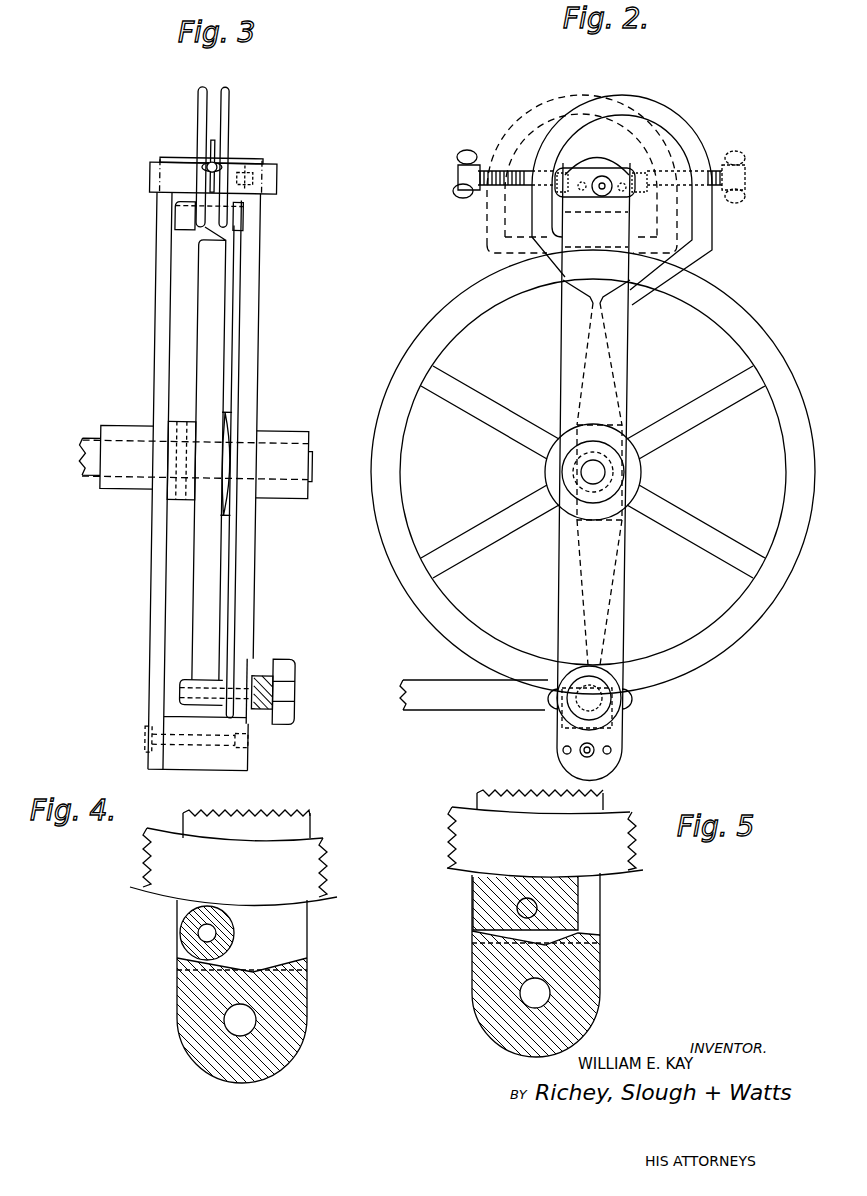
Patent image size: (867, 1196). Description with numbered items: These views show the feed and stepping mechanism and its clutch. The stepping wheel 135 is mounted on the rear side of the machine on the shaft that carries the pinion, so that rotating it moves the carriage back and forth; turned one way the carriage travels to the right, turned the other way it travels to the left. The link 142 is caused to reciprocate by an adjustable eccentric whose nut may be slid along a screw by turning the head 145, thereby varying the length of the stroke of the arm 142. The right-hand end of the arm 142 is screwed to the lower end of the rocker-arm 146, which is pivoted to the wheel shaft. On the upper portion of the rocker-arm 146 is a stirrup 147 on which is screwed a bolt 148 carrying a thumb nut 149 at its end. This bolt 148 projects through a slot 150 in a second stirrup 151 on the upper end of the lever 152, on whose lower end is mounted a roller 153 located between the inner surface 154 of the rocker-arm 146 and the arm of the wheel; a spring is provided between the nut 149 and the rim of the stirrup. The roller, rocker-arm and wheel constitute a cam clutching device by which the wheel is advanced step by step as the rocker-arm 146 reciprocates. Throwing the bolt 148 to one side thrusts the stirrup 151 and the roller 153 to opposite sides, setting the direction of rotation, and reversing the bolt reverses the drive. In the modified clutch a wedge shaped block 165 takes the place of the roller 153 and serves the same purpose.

In FIG. 3, the stepping wheel 135 is at (196, 262).
In FIG. 2, the stepping wheel 135 is at (776, 288).
In FIG. 4, the stepping wheel 135 is at (233, 857).
In FIG. 3, the link 142 is at (277, 664).
In FIG. 2, the link 142 is at (432, 696).
In FIG. 4, the head 145 is at (291, 957).
In FIG. 3, the rocker-arm 146 is at (259, 306).
In FIG. 4, the rocker-arm 146 is at (308, 1030).
In FIG. 3, the stirrup 147 is at (266, 161).
In FIG. 2, the bolt 148 is at (455, 168).
In FIG. 3, the thumb nut 149 is at (209, 145).
In FIG. 2, the thumb nut 149 is at (467, 147).
In FIG. 3, the slot 150 is at (211, 88).
In FIG. 3, the second stirrup 151 is at (191, 112).
In FIG. 2, the second stirrup 151 is at (684, 108).
In FIG. 3, the lever 152 is at (237, 222).
In FIG. 4, the roller 153 is at (179, 934).
In FIG. 2, the inner surface 154 is at (516, 187).
In FIG. 5, the wedge shaped block 165 is at (582, 899).